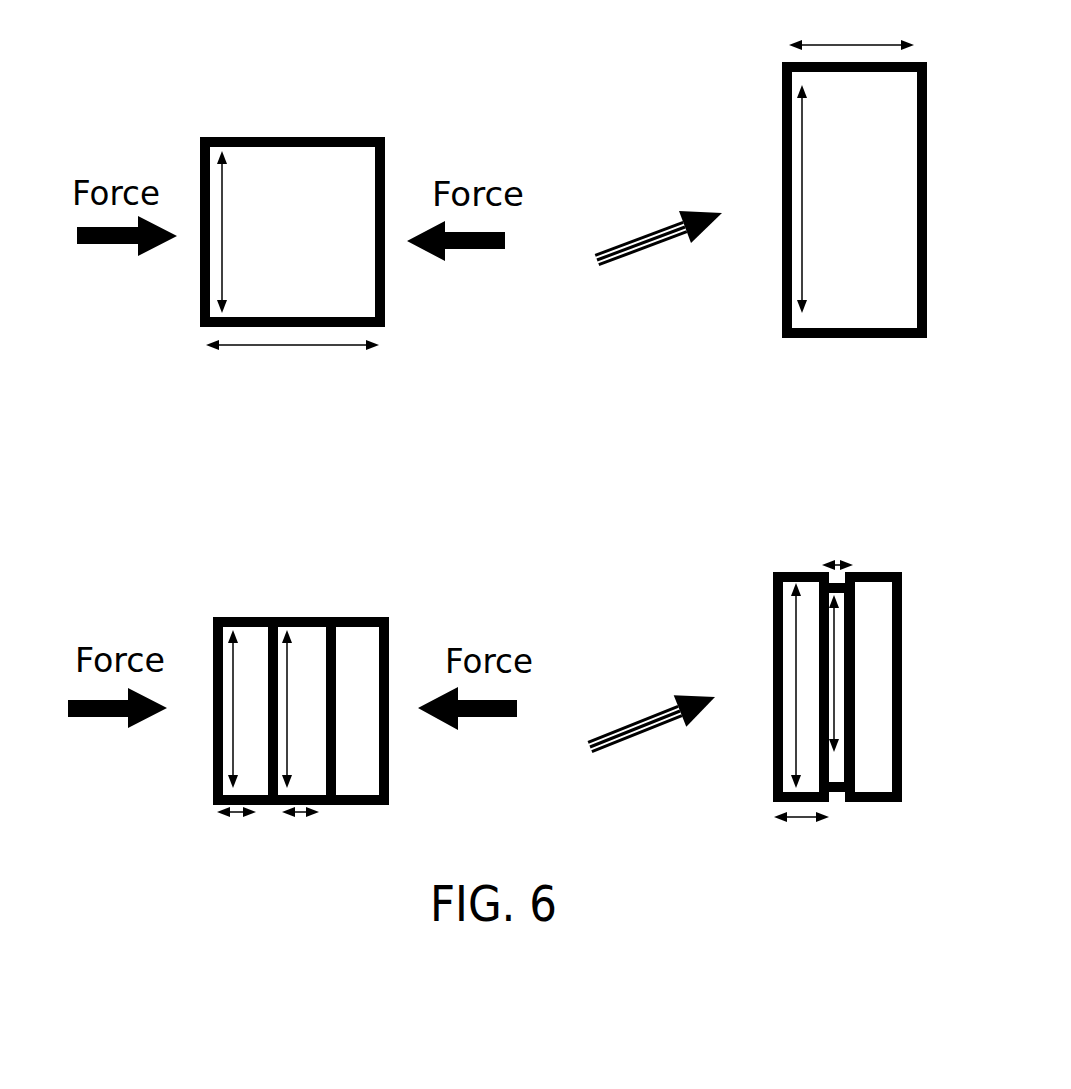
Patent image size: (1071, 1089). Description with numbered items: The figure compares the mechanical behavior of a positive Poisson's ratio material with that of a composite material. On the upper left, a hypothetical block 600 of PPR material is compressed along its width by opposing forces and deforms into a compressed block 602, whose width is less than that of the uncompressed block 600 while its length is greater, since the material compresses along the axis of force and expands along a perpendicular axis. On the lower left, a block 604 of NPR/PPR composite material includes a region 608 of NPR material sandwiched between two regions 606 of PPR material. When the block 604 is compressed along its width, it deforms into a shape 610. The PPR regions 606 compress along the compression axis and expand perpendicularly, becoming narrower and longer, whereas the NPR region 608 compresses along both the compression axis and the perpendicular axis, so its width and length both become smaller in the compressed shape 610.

The block of PPR material 600 is at (308, 249).
The compressed block 602 is at (875, 209).
The block of NPR/PPR composite material 604 is at (126, 826).
The regions of PPR material 606 is at (215, 643).
The region of NPR material 608 is at (300, 617).
The deformed composite shape 610 is at (897, 868).